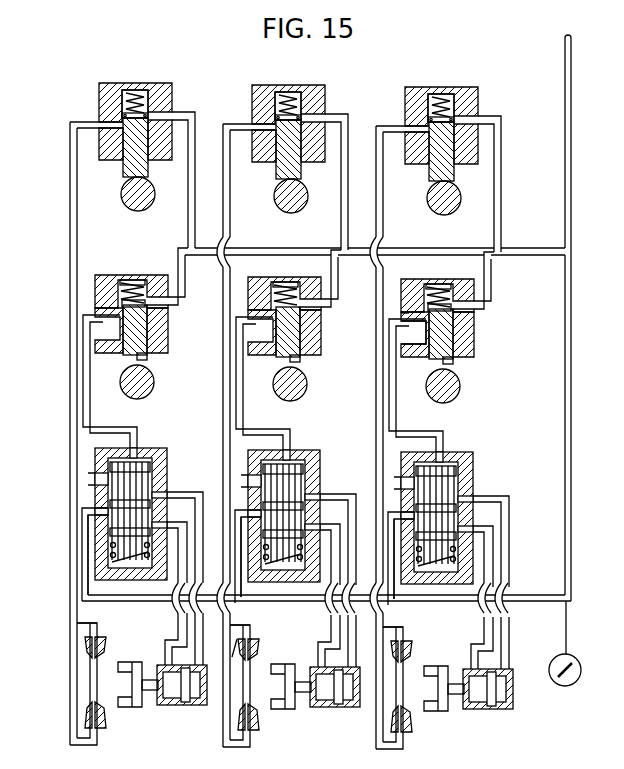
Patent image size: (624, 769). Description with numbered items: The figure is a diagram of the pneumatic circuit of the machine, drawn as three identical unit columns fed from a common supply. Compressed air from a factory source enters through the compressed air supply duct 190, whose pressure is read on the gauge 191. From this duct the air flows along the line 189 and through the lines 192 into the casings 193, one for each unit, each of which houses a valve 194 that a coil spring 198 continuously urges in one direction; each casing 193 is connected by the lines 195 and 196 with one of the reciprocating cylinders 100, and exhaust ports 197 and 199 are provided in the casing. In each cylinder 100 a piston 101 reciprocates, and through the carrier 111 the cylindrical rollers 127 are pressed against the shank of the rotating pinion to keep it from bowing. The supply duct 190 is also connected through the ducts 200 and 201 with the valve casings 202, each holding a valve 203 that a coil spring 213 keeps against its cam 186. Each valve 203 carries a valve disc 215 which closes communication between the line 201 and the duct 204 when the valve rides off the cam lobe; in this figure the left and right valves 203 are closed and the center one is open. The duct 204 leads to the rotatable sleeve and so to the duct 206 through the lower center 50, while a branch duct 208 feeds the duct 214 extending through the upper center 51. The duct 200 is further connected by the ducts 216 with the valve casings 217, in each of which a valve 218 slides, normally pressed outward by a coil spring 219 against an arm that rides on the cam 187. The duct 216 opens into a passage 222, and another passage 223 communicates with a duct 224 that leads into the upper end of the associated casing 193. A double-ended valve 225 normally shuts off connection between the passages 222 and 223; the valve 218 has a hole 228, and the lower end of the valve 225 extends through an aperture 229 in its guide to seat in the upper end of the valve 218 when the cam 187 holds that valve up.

The lower center 50 is at (100, 730).
The upper center 51 is at (104, 648).
The reciprocating cylinder 100 is at (180, 706).
The piston 101 is at (185, 668).
The carrier 111 is at (140, 664).
The cylindrical rollers 127 is at (116, 667).
The cam 186 is at (130, 202).
The cam 187 is at (148, 384).
The line 189 is at (518, 601).
The compressed air supply duct 190 is at (566, 60).
The gauge 191 is at (573, 658).
The lines 192 is at (82, 554).
The casing 193 is at (160, 466).
The valve 194 is at (143, 462).
The line 195 is at (172, 492).
The line 196 is at (182, 522).
The exhaust port 197 is at (96, 478).
The coil spring 198 is at (128, 565).
The exhaust port 199 is at (96, 536).
The duct 200 is at (512, 248).
The duct 201 is at (188, 222).
The valve casing 202 is at (160, 83).
The valve 203 is at (140, 165).
The duct 204 is at (70, 200).
The duct 206 is at (104, 716).
The duct 208 is at (97, 624).
The coil spring 213 is at (134, 90).
The duct 214 is at (252, 650).
The valve disc 215 is at (122, 115).
The duct 216 is at (182, 280).
The valve casing 217 is at (168, 344).
The valve 218 is at (140, 318).
The coil spring 219 is at (132, 284).
The passage 222 is at (430, 302).
The passage 223 is at (403, 312).
The duct 224 is at (94, 432).
The double-ended valve 225 is at (124, 302).
The hole 228 is at (147, 358).
The aperture 229 is at (412, 352).